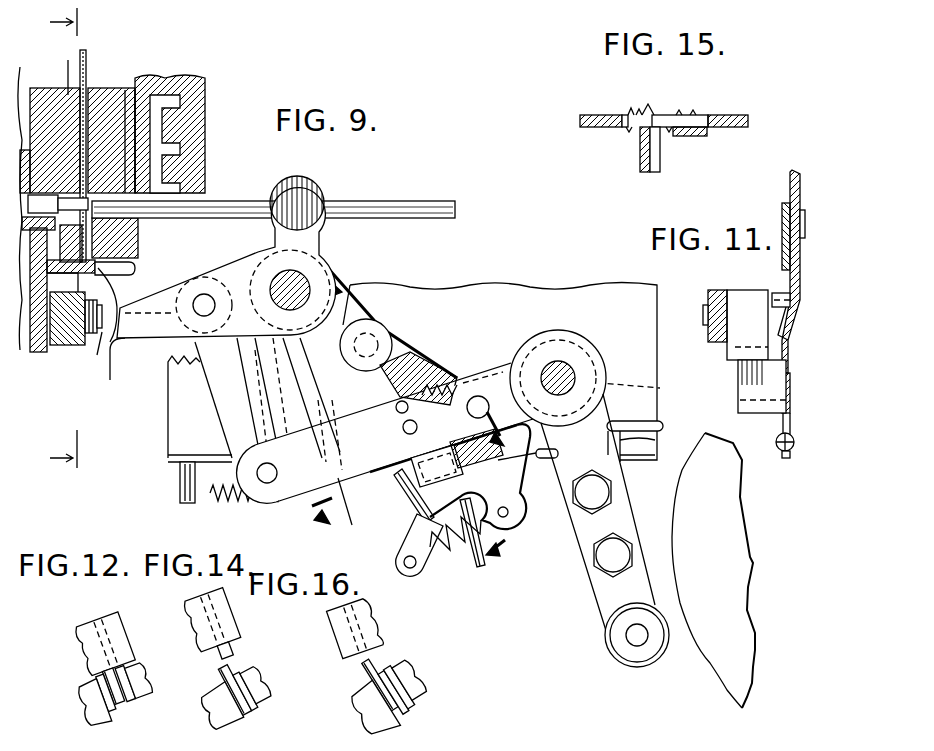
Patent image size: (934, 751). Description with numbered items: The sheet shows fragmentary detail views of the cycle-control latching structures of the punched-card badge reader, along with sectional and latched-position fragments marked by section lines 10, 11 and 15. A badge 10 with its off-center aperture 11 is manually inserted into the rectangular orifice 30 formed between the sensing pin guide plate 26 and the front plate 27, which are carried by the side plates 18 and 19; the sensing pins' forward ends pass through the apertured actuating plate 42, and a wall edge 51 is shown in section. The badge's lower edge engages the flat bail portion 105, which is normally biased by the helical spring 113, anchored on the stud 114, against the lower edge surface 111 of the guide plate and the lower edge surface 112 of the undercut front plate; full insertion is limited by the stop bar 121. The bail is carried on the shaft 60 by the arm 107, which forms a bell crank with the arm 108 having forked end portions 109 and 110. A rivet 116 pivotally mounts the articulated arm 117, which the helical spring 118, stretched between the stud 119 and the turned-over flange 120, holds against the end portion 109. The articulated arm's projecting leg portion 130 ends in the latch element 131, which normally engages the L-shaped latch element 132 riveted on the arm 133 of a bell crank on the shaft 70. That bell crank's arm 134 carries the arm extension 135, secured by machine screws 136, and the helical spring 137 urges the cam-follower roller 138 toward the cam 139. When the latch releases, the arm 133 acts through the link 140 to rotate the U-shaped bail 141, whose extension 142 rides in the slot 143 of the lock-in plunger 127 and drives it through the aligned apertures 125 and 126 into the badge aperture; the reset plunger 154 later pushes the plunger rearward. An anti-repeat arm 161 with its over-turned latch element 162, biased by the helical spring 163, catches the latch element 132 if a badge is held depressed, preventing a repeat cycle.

In FIG. 9, the badge 10 is at (97, 35).
In FIG. 9, the off-center aperture 11 is at (108, 90).
In FIG. 9, the section line 15 is at (418, 478).
In FIG. 9, the side plate 18 is at (610, 300).
In FIG. 9, the side plate 19 is at (180, 390).
In FIG. 9, the sensing pin guide plate 26 is at (135, 90).
In FIG. 9, the front plate 27 is at (60, 66).
In FIG. 9, the rectangular orifice 30 is at (94, 92).
In FIG. 9, the actuating plate 42 is at (205, 130).
In FIG. 9, the wall 51 is at (25, 197).
In FIG. 9, the shaft 60 is at (292, 288).
In FIG. 9, the shaft 70 is at (560, 360).
In FIG. 9, the bail portion 105 is at (103, 315).
In FIG. 9, the arm 107 is at (96, 348).
In FIG. 9, the bell crank arm 108 is at (345, 278).
In FIG. 9, the forked end portion 109 is at (505, 475).
In FIG. 15, the forked end portion 109 is at (685, 136).
In FIG. 11, the forked end portion 109 is at (795, 248).
In FIG. 9, the forked end portion 110 is at (275, 492).
In FIG. 9, the lower edge surface 111 is at (123, 276).
In FIG. 9, the lower edge surface 112 is at (62, 303).
In FIG. 9, the helical spring 113 is at (247, 505).
In FIG. 9, the stud 114 is at (180, 477).
In FIG. 9, the rivet 116 is at (372, 330).
In FIG. 9, the articulated arm 117 is at (517, 497).
In FIG. 15, the articulated arm 117 is at (737, 115).
In FIG. 11, the articulated arm 117 is at (782, 222).
In FIG. 9, the helical spring 118 is at (430, 368).
In FIG. 9, the stud 119 is at (395, 406).
In FIG. 9, the flange 120 is at (462, 380).
In FIG. 9, the stop bar 121 is at (68, 360).
In FIG. 9, the aperture 125 is at (130, 90).
In FIG. 9, the aperture 126 is at (50, 95).
In FIG. 9, the lock-in plunger 127 is at (232, 200).
In FIG. 9, the projecting leg portion 130 is at (472, 545).
In FIG. 11, the projecting leg portion 130 is at (792, 395).
In FIG. 12, the projecting leg portion 130 is at (155, 701).
In FIG. 14, the projecting leg portion 130 is at (270, 705).
In FIG. 16, the projecting leg portion 130 is at (420, 703).
In FIG. 9, the latch element 131 is at (478, 570).
In FIG. 15, the latch element 131 is at (655, 148).
In FIG. 11, the latch element 131 is at (742, 387).
In FIG. 12, the latch element 131 is at (135, 685).
In FIG. 14, the latch element 131 is at (247, 675).
In FIG. 16, the latch element 131 is at (395, 677).
In FIG. 9, the L-shaped latch element 132 is at (366, 455).
In FIG. 11, the L-shaped latch element 132 is at (745, 300).
In FIG. 12, the L-shaped latch element 132 is at (118, 673).
In FIG. 14, the L-shaped latch element 132 is at (233, 651).
In FIG. 16, the L-shaped latch element 132 is at (370, 660).
In FIG. 9, the arm 133 is at (330, 398).
In FIG. 11, the arm 133 is at (715, 290).
In FIG. 12, the arm 133 is at (74, 627).
In FIG. 14, the arm 133 is at (186, 604).
In FIG. 16, the arm 133 is at (327, 620).
In FIG. 9, the arm 134 is at (640, 445).
In FIG. 9, the arm extension 135 is at (600, 598).
In FIG. 9, the machine screws 136 is at (580, 540).
In FIG. 9, the helical spring 137 is at (658, 390).
In FIG. 9, the cam-follower roller 138 is at (622, 650).
In FIG. 9, the cam 139 is at (742, 587).
In FIG. 9, the link 140 is at (223, 403).
In FIG. 9, the U-shaped bail 141 is at (128, 374).
In FIG. 9, the extension 142 is at (300, 190).
In FIG. 9, the slot 143 is at (330, 205).
In FIG. 9, the plunger 154 is at (32, 356).
In FIG. 9, the arm 161 is at (398, 548).
In FIG. 15, the arm 161 is at (596, 115).
In FIG. 11, the arm 161 is at (789, 460).
In FIG. 12, the arm 161 is at (88, 700).
In FIG. 14, the arm 161 is at (213, 702).
In FIG. 16, the arm 161 is at (342, 690).
In FIG. 9, the latch element 162 is at (418, 570).
In FIG. 15, the latch element 162 is at (640, 148).
In FIG. 11, the latch element 162 is at (790, 328).
In FIG. 12, the latch element 162 is at (121, 707).
In FIG. 14, the latch element 162 is at (248, 713).
In FIG. 16, the latch element 162 is at (400, 720).
In FIG. 9, the helical spring 163 is at (488, 560).
In FIG. 15, the helical spring 163 is at (660, 115).
In FIG. 11, the helical spring 163 is at (795, 448).